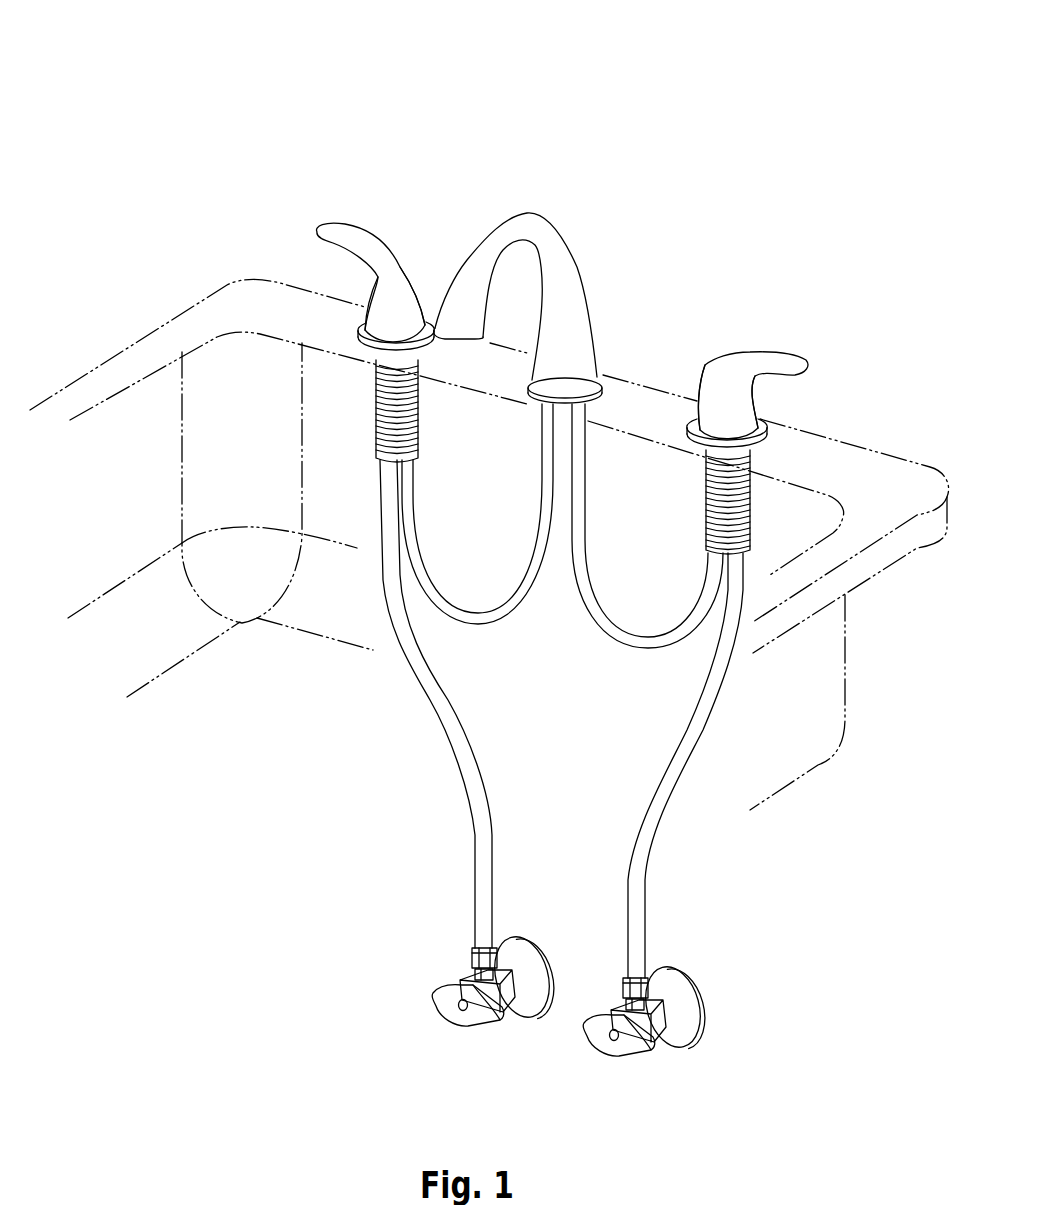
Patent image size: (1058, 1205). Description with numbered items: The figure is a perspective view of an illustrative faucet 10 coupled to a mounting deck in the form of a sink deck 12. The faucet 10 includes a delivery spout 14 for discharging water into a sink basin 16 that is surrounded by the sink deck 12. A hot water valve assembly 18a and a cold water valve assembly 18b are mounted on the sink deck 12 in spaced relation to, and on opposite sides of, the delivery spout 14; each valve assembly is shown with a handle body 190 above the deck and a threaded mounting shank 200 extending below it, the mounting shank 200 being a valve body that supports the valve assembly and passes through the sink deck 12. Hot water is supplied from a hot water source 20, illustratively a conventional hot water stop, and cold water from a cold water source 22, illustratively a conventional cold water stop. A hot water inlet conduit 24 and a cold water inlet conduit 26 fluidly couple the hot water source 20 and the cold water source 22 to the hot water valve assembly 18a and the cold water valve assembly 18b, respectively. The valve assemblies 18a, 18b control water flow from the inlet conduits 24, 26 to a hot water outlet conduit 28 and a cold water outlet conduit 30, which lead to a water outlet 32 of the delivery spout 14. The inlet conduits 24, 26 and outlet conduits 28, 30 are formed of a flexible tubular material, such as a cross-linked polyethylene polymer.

The faucet 10 is at (752, 133).
The sink deck 12 is at (867, 472).
The delivery spout 14 is at (527, 223).
The sink basin 16 is at (136, 418).
The hot water valve assembly 18a is at (335, 213).
The cold water valve assembly 18b is at (770, 340).
The handle body 190 is at (392, 262).
The mounting shank 200 is at (423, 443).
The hot water source 20 is at (430, 993).
The cold water source 22 is at (600, 1056).
The hot water inlet conduit 24 is at (473, 830).
The cold water inlet conduit 26 is at (647, 858).
The hot water outlet conduit 28 is at (475, 625).
The cold water outlet conduit 30 is at (648, 648).
The water outlet 32 is at (467, 340).